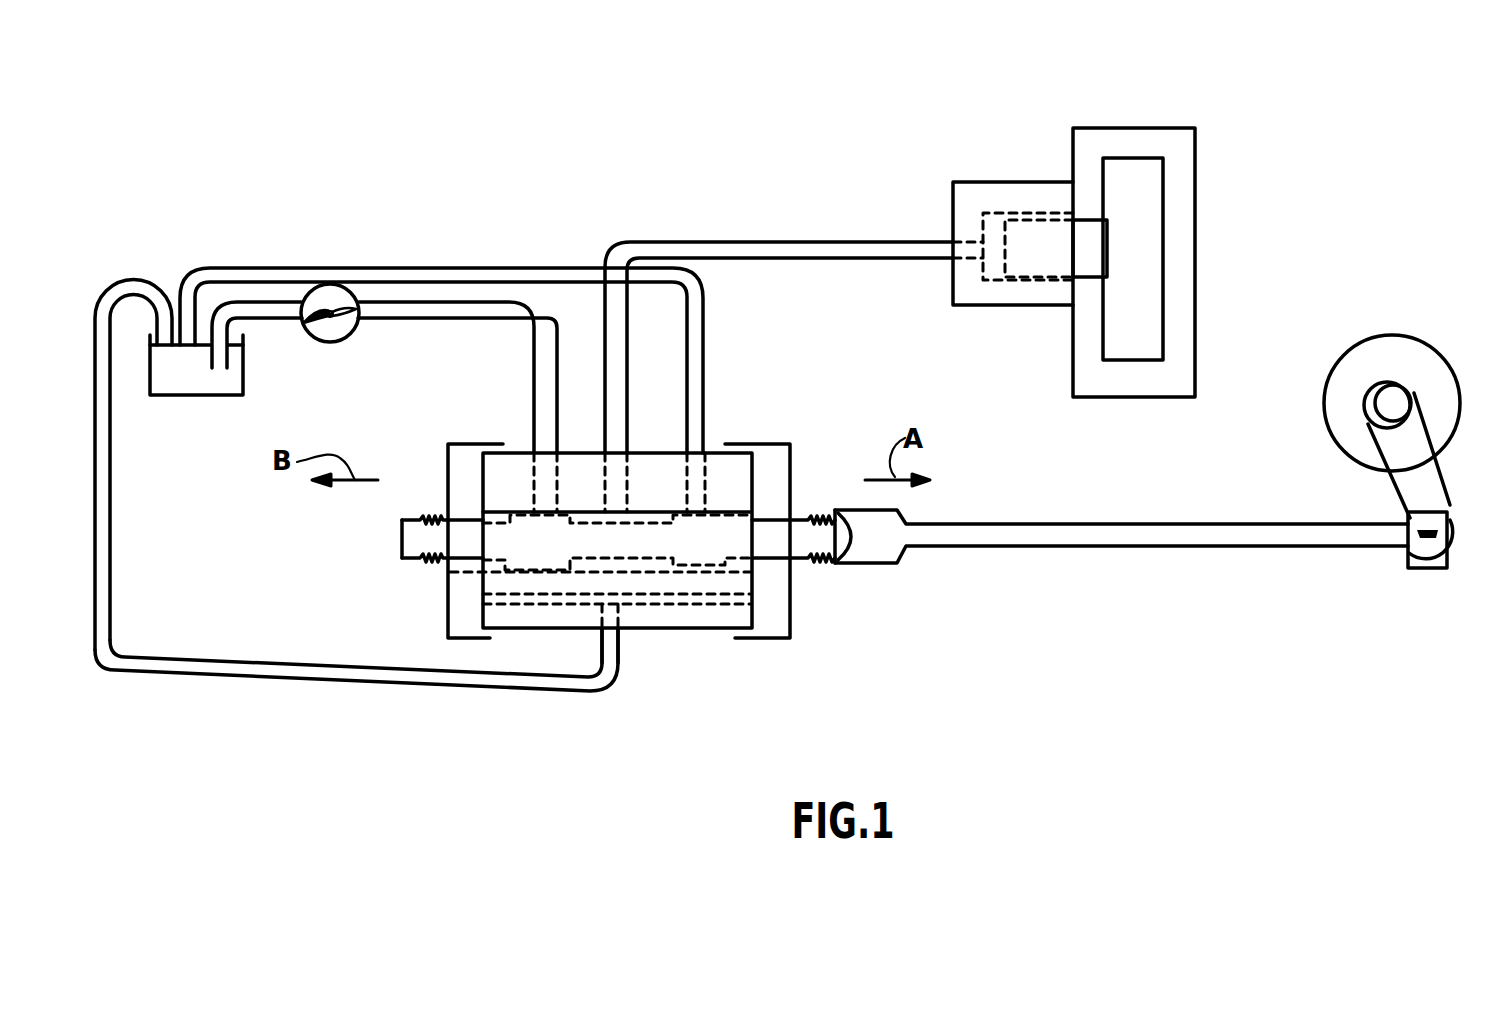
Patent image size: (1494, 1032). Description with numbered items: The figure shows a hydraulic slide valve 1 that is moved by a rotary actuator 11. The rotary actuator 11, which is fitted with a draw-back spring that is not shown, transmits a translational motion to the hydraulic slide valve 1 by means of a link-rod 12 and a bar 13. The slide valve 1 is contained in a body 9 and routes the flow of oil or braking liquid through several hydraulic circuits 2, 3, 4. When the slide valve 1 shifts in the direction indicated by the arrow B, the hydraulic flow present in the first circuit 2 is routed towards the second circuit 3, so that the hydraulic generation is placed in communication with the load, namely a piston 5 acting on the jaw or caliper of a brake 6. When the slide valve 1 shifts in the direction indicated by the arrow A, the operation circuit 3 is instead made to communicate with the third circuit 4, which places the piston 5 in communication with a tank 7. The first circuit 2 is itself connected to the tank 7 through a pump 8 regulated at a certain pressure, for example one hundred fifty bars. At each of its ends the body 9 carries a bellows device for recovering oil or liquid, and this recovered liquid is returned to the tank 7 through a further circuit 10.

The hydraulic slide valve 1 is at (830, 563).
The first circuit 2 is at (532, 345).
The second circuit 3 is at (627, 357).
The third circuit 4 is at (704, 292).
The piston 5 is at (1022, 280).
The brake 6 is at (1195, 178).
The tank 7 is at (243, 380).
The pump 8 is at (358, 330).
The body 9 is at (675, 628).
The circuit 10 is at (207, 657).
The rotary actuator 11 is at (1440, 348).
The link-rod 12 is at (1447, 500).
The bar 13 is at (1195, 548).